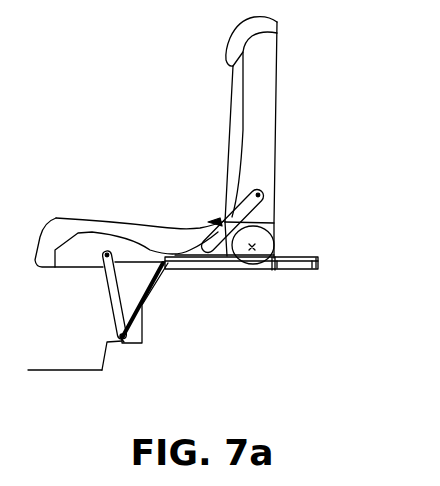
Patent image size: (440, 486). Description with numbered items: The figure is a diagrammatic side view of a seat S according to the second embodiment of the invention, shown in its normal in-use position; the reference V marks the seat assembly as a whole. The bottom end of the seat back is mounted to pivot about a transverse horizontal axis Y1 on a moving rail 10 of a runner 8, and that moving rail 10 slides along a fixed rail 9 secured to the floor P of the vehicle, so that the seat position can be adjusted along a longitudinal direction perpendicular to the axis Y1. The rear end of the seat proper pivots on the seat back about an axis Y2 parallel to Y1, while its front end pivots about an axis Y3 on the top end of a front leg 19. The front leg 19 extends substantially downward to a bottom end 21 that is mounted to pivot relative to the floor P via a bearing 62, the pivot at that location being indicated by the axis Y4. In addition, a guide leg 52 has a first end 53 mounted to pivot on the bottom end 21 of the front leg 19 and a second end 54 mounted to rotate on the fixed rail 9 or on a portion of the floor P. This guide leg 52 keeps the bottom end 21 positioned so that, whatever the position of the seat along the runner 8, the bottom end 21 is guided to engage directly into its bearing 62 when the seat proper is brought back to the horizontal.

The seat S is at (205, 133).
The vehicle seat V is at (332, 195).
The transverse horizontal axis Y1 is at (256, 246).
The axis Y2 is at (260, 195).
The axis Y3 is at (108, 253).
The pivot axis on floor bracket Y4 is at (119, 334).
The runner 8 is at (320, 282).
The fixed rail 9 is at (290, 268).
The moving rail 10 is at (318, 258).
The leg 19 is at (105, 280).
The bottom end 21 is at (108, 338).
The guide leg 52 is at (143, 315).
The first end 53 is at (122, 342).
The second end 54 is at (273, 262).
The bearing 62 is at (138, 333).
The floor P is at (53, 372).